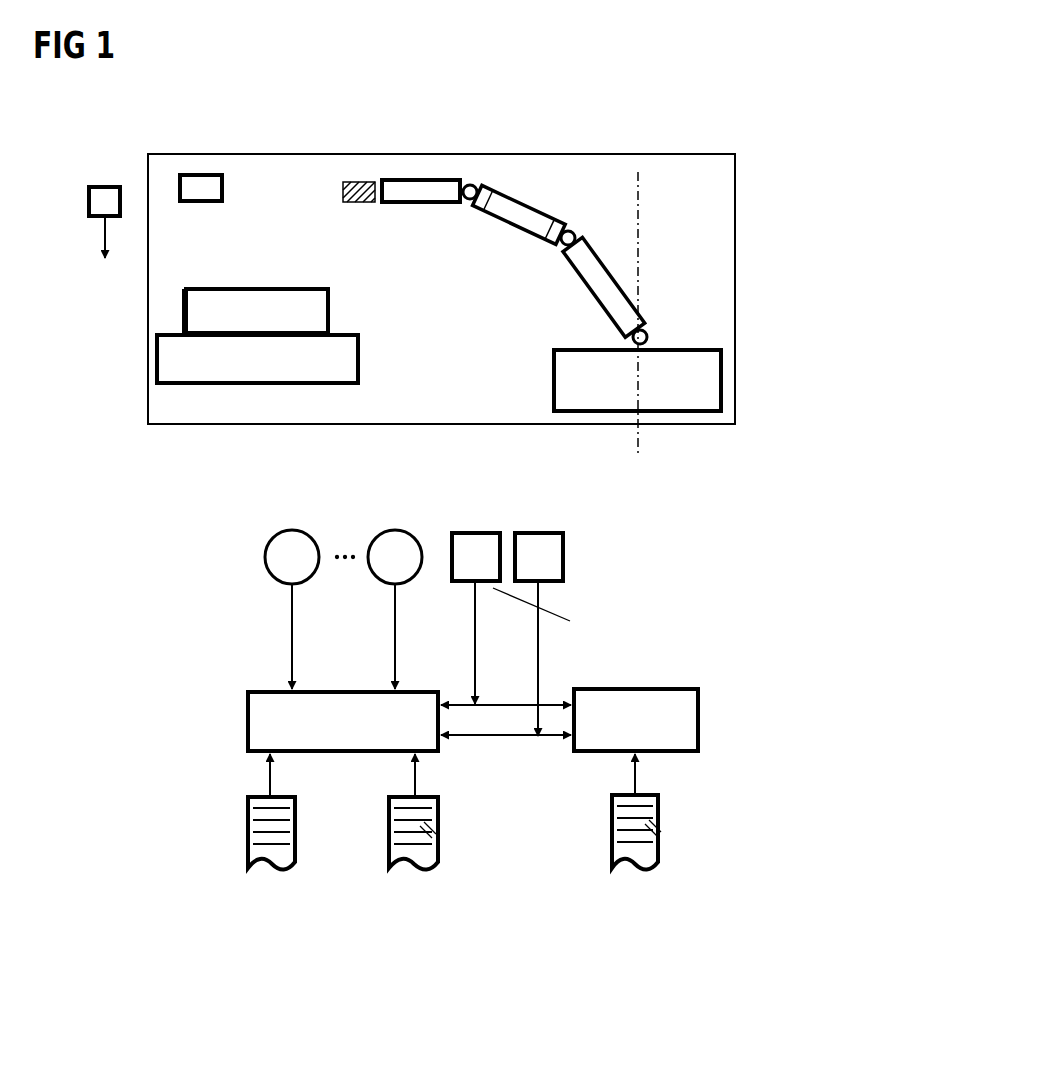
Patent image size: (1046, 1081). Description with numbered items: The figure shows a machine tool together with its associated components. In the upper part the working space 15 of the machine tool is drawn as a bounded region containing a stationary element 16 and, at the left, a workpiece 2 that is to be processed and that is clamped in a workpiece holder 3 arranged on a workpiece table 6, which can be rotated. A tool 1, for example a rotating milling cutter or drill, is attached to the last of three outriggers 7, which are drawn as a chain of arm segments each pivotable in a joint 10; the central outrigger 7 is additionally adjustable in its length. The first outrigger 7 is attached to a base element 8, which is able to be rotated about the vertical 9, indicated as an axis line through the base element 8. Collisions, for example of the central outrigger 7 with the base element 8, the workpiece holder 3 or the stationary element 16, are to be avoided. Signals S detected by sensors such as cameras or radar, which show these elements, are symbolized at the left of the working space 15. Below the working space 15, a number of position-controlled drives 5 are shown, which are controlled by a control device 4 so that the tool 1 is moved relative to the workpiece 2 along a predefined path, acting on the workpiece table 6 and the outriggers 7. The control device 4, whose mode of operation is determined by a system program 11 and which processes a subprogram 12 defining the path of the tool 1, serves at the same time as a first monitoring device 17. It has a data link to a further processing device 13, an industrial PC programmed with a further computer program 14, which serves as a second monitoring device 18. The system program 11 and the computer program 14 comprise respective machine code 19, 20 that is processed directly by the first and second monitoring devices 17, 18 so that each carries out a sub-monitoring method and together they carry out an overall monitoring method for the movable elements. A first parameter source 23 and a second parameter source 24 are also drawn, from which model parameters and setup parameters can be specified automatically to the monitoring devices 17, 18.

The tool 1 is at (358, 181).
The workpiece 2 is at (178, 303).
The workpiece holder 3 is at (182, 334).
The control device 4 is at (358, 721).
The position-controlled drives 5 is at (289, 528).
The workpiece table 6 is at (152, 362).
The outriggers 7 is at (412, 178).
The base element 8 is at (723, 376).
The vertical 9 is at (640, 440).
The joint 10 is at (471, 184).
The system program 11 is at (411, 864).
The subprogram 12 is at (271, 864).
The further processing device 13 is at (731, 726).
The further computer program 14 is at (633, 864).
The working space 15 is at (735, 297).
The stationary element 16 is at (205, 173).
The first monitoring device 17 is at (245, 718).
The second monitoring device 18 is at (700, 715).
The machine code 19 is at (428, 830).
The machine code 20 is at (652, 828).
The first parameter source 23 is at (475, 531).
The second parameter source 24 is at (540, 531).
The signals S is at (103, 232).